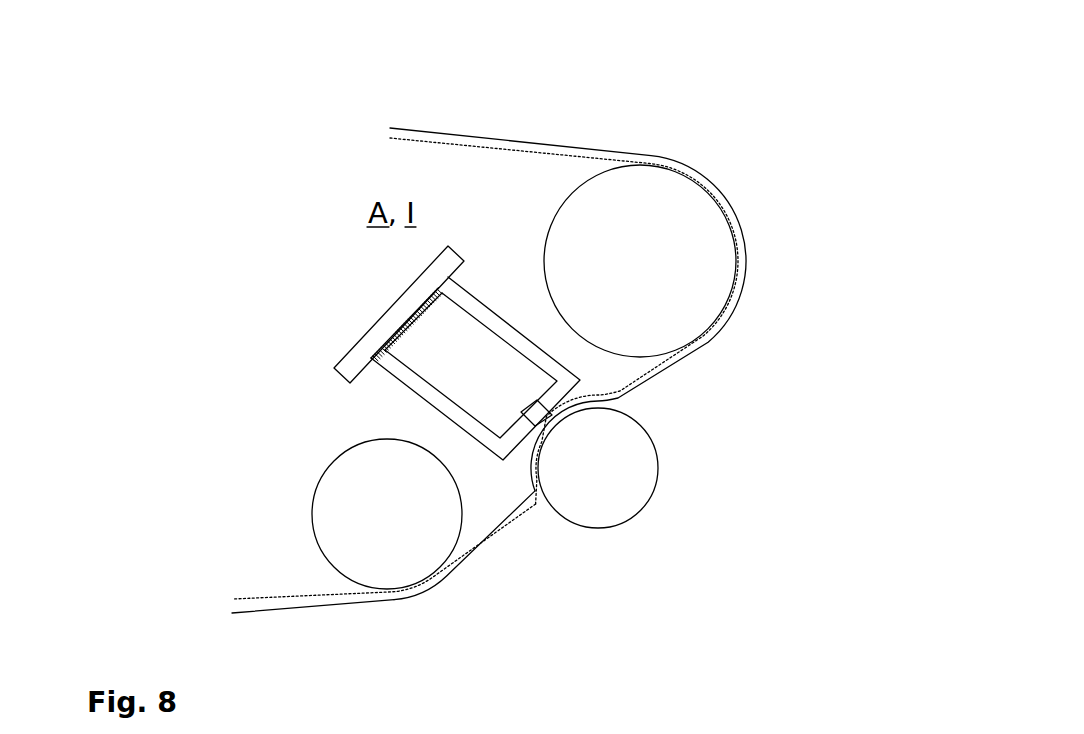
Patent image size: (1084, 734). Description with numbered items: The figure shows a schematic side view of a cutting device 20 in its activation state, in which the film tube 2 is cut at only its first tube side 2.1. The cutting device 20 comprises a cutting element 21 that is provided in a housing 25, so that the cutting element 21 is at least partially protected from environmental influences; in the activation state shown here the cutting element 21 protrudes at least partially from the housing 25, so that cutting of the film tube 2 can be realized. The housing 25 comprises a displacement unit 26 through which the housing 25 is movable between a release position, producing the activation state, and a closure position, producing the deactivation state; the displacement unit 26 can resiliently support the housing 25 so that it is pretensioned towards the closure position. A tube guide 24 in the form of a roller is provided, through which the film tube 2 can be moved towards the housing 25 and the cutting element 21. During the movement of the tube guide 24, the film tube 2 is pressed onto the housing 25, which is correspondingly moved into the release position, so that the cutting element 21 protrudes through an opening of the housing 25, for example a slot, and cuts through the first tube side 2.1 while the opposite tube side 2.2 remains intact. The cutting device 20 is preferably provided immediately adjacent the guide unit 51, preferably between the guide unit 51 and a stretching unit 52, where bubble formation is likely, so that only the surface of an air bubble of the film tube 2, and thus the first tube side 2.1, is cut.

The film tube 2 is at (482, 100).
The first tube side 2.1 is at (253, 597).
The second web section 2.2 is at (453, 577).
The cutting device 20 is at (366, 267).
The cutting element 21 is at (541, 398).
The tube guide 24 is at (623, 457).
The housing 25 is at (408, 382).
The displacement unit 26 is at (358, 353).
The guide unit 51 is at (687, 277).
The stretching unit 52 is at (395, 562).